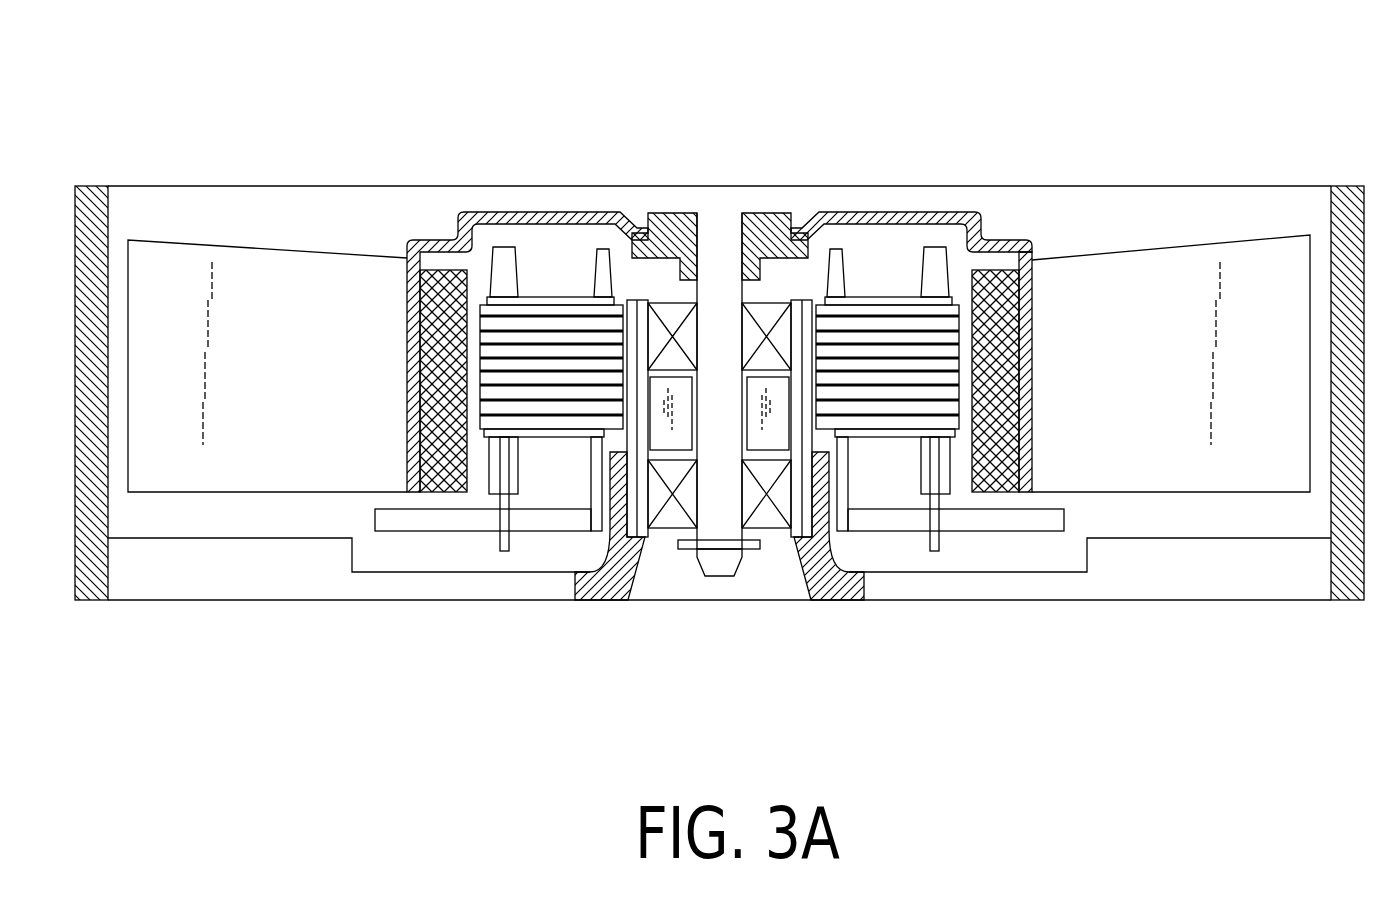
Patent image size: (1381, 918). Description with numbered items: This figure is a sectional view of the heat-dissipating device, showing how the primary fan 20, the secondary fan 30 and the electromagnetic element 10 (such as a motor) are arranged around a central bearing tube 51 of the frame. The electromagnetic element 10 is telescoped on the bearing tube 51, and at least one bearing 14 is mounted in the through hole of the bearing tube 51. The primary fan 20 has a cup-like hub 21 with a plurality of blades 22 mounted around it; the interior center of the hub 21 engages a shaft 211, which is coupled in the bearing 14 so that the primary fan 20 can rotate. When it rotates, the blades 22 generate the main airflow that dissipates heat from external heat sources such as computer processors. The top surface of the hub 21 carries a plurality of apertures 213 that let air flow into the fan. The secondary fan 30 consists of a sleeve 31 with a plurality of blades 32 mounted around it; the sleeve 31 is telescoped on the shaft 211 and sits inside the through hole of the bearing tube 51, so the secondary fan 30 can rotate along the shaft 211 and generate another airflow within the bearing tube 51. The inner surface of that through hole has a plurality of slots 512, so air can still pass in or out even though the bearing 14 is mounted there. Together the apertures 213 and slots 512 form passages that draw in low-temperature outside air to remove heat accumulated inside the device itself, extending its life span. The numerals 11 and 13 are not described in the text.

The electromagnetic element 10 is at (565, 248).
The circuit board 11 is at (442, 520).
The hub 13 is at (660, 290).
The bearing 14 is at (668, 520).
The primary fan 20 is at (397, 242).
The hub 21 is at (1032, 383).
The shaft 211 is at (718, 267).
The apertures 213 is at (915, 213).
The blades 22 is at (1102, 297).
The secondary fan 30 is at (704, 432).
The sleeve 31 is at (753, 417).
The blades 32 is at (660, 420).
The bearing tube 51 is at (610, 568).
The slots 512 is at (788, 555).